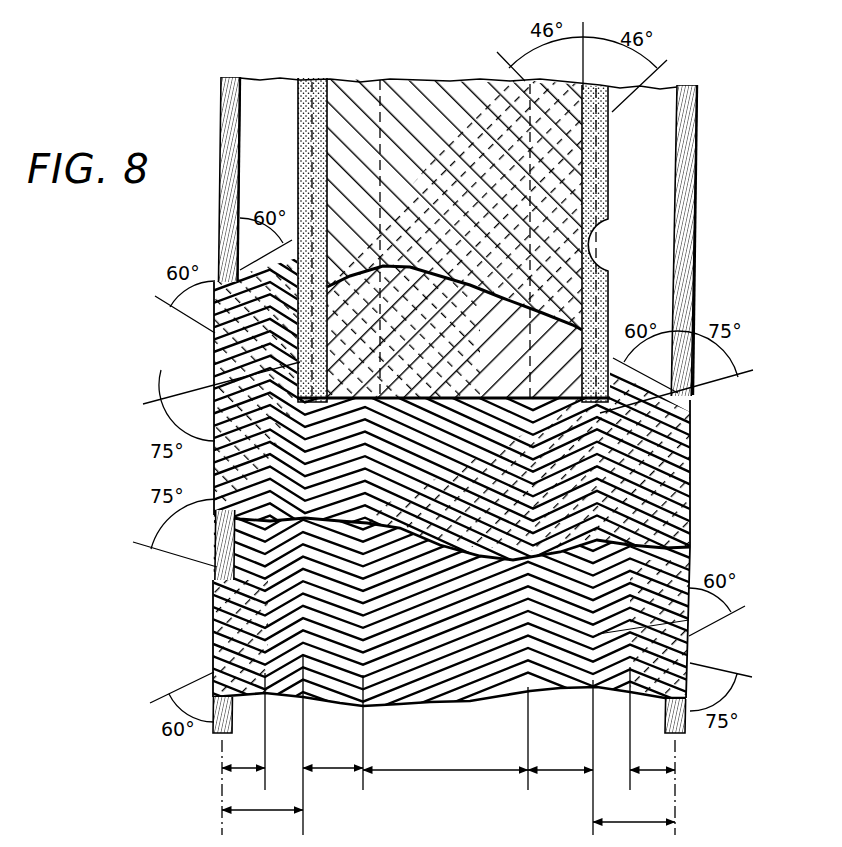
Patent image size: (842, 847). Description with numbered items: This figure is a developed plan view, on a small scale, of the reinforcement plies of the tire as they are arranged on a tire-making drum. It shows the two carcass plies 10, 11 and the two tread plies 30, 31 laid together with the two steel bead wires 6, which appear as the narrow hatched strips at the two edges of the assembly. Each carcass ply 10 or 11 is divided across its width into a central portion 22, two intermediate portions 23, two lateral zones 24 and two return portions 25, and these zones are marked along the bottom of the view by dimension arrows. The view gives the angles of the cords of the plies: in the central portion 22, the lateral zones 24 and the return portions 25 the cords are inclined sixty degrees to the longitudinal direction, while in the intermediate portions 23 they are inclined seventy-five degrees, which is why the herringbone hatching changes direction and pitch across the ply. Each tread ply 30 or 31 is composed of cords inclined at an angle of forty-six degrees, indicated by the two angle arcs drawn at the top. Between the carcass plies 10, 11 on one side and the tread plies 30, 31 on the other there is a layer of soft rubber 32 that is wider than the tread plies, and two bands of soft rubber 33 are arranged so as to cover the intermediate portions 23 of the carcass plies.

The steel bead wire 6 is at (222, 171).
The carcass ply 10 is at (418, 696).
The carcass ply 11 is at (224, 538).
The central portion 22 is at (445, 766).
The intermediate portion 23 is at (332, 764).
The lateral zone 24 is at (270, 806).
The return portion 25 is at (243, 764).
The tread ply 30 is at (497, 137).
The tread ply 31 is at (410, 90).
The layer of soft rubber 32 is at (601, 236).
The band of soft rubber 33 is at (302, 83).